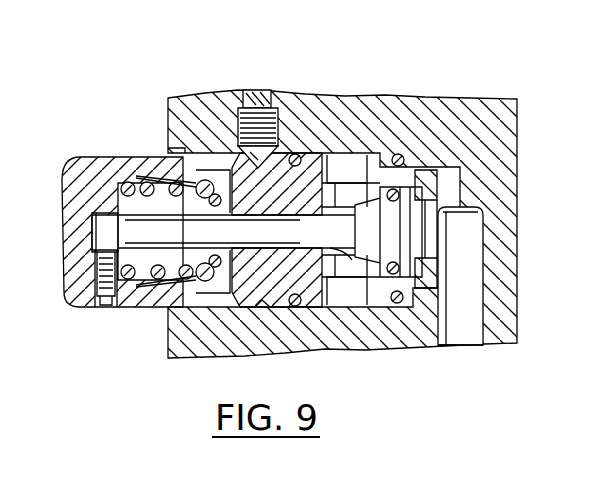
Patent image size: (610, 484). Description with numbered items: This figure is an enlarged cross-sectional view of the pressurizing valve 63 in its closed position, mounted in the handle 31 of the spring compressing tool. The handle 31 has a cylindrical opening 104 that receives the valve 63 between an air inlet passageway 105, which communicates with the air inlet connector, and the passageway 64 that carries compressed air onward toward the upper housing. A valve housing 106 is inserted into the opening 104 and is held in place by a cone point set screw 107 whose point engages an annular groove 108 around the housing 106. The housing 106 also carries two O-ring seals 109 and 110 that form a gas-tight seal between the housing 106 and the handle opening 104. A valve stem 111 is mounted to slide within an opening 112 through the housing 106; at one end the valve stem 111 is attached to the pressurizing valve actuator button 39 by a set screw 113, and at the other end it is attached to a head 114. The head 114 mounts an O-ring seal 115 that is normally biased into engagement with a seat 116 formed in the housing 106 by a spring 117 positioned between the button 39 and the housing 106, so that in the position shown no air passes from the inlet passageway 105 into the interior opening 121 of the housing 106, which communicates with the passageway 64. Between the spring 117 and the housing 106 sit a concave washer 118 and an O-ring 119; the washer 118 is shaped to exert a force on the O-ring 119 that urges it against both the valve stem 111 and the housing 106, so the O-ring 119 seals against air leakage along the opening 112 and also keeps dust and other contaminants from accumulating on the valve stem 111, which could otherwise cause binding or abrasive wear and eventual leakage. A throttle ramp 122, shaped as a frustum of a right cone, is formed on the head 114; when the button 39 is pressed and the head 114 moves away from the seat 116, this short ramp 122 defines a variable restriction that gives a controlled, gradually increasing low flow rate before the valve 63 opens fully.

The handle 31 is at (518, 148).
The pressurizing valve actuator button 39 is at (67, 182).
The pressurizing valve 63 is at (153, 320).
The passageway 64 is at (347, 205).
The cylindrical opening 104 is at (170, 158).
The air inlet passageway 105 is at (480, 314).
The valve housing 106 is at (240, 314).
The cone point set screw 107 is at (240, 93).
The annular groove 108 is at (262, 303).
The O-ring seal 109 is at (303, 306).
The O-ring seal 110 is at (397, 308).
The valve stem 111 is at (278, 245).
The opening 112 is at (330, 248).
The set screw 113 is at (103, 306).
The head 114 is at (420, 197).
The O-ring seal 115 is at (397, 263).
The seat 116 is at (405, 285).
The spring 117 is at (147, 182).
The concave washer 118 is at (208, 262).
The O-ring 119 is at (222, 268).
The interior opening 121 is at (343, 183).
The throttle ramp 122 is at (445, 218).